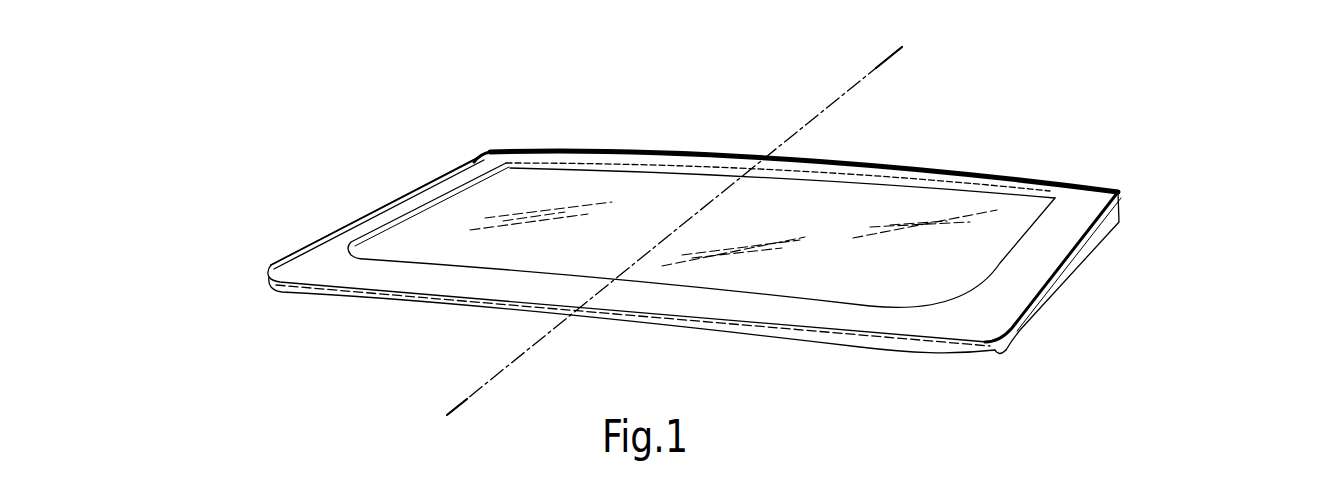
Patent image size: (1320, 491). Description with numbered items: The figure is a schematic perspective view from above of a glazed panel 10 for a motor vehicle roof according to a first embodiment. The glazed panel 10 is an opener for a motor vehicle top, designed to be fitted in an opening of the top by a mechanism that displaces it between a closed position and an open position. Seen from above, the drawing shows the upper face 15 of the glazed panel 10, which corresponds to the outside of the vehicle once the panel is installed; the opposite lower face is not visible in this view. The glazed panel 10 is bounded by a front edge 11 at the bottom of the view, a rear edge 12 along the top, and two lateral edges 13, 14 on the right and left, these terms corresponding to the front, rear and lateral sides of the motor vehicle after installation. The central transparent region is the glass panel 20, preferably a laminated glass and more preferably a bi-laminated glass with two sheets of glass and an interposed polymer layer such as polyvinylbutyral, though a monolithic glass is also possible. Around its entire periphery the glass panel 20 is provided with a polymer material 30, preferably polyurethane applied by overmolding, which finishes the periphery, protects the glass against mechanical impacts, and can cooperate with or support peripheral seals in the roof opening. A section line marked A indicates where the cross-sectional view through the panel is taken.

The glazed panel 10 is at (405, 158).
The front edge 11 is at (773, 362).
The rear edge 12 is at (632, 146).
The lateral edge 13 is at (1113, 296).
The lateral edge 14 is at (301, 208).
The upper face 15 is at (633, 388).
The glass panel 20 is at (923, 242).
The polymer material 30 is at (987, 317).
The section line A- A is at (888, 58).